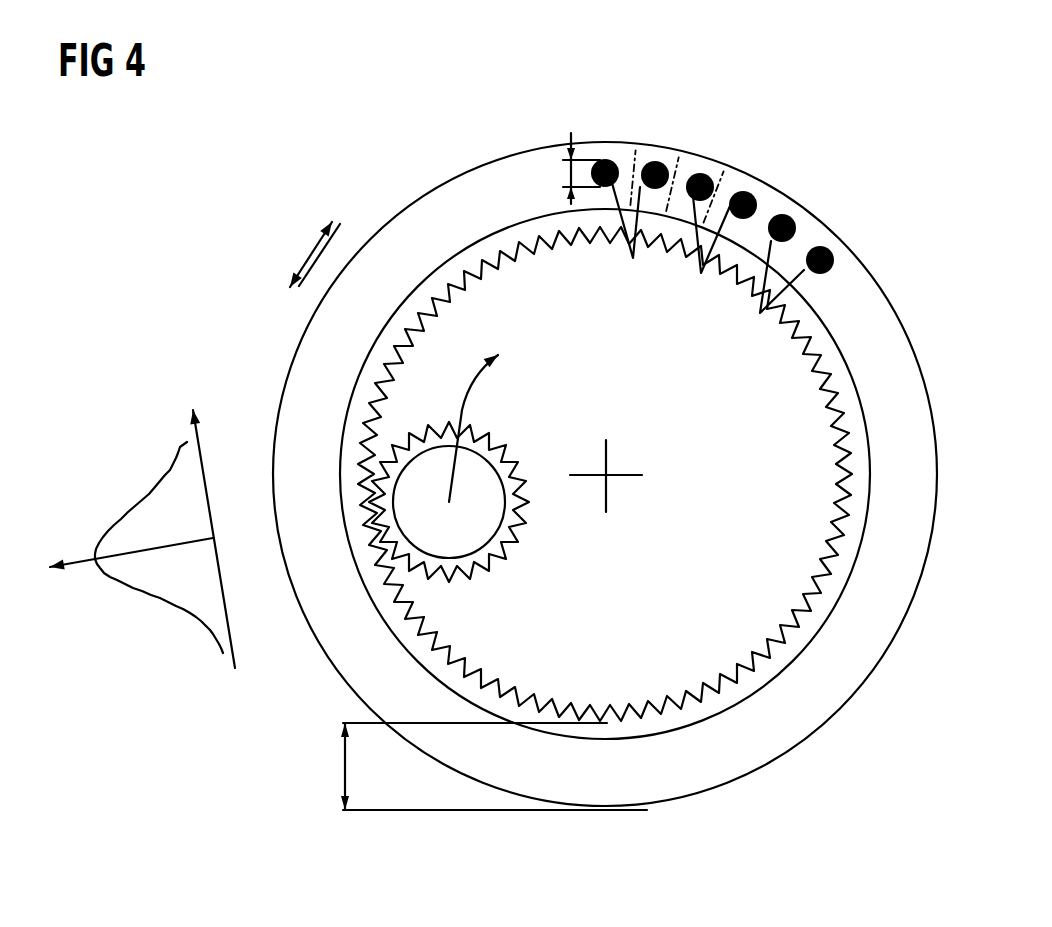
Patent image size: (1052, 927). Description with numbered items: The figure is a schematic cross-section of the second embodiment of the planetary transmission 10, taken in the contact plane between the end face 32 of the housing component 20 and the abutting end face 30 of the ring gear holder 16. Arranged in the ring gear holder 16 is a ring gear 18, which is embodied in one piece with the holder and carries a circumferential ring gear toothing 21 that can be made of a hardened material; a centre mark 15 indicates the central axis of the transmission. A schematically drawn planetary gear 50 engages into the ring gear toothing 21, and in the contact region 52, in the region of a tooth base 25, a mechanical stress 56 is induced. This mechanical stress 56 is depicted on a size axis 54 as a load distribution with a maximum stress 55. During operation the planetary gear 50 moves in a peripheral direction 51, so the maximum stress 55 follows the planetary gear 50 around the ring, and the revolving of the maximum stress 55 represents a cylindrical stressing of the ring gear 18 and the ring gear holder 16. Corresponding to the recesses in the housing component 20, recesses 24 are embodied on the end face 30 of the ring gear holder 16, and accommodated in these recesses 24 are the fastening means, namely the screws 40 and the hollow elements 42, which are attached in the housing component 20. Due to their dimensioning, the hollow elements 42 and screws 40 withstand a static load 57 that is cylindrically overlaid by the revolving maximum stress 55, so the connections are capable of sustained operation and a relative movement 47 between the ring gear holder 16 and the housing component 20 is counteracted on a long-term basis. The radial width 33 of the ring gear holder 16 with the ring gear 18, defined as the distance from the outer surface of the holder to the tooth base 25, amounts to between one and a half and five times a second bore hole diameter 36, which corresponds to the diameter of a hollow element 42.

The planetary transmission 10 is at (262, 121).
The axis of rotation 15 is at (607, 474).
The ring gear holder 16 is at (605, 474).
The ring gear 18 is at (712, 707).
The housing component 20 is at (392, 217).
The ring gear toothing 21 is at (653, 710).
The recesses 24 is at (605, 159).
The tooth base 25 is at (605, 723).
The end face of the ring gear holder 30 is at (605, 411).
The end face of the housing component 32 is at (453, 210).
The radial width 33 is at (345, 766).
The second bore hole diameter 36 is at (566, 172).
The screws 40 is at (708, 264).
The hollow elements 42 is at (612, 160).
The relative movement 47 is at (295, 257).
The planetary gear 50 is at (365, 465).
The peripheral direction 51 is at (465, 405).
The contact region 52 is at (343, 513).
The size axis 54 is at (80, 561).
The maximum stress 55 is at (97, 548).
The mechanical stress 56 is at (163, 487).
The static load 57 is at (688, 150).